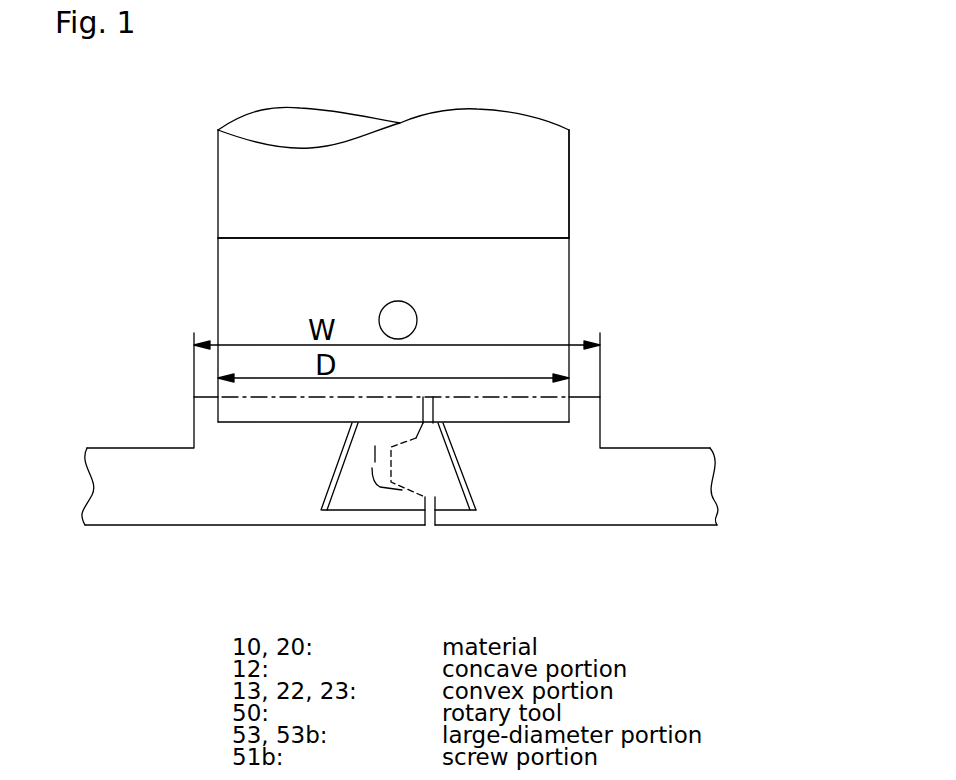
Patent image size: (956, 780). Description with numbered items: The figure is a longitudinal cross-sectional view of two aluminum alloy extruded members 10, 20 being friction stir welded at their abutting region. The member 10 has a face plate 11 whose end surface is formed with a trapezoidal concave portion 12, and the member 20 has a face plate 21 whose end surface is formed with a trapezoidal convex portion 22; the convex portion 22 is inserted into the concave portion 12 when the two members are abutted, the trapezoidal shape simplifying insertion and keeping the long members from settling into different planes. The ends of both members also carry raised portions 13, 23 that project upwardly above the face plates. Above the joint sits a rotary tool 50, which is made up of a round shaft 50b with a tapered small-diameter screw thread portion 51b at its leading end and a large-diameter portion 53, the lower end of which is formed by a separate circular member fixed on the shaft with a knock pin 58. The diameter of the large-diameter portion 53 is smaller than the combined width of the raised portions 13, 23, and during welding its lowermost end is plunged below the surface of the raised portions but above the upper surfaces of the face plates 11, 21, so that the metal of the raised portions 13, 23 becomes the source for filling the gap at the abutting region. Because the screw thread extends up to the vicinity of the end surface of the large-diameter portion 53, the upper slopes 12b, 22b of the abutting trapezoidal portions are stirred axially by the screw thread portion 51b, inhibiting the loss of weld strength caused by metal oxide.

The extruded member 10 is at (253, 504).
The face plate 11 is at (102, 472).
The concave portion 12 is at (375, 468).
The upper slope of concave portion 12b is at (375, 446).
The raised portion 13 is at (203, 414).
The extruded member 20 is at (556, 509).
The face plate 21 is at (683, 462).
The convex portion 22 is at (418, 472).
The upper slope of convex portion 22b is at (415, 440).
The raised portion 23 is at (583, 412).
The rotary tool 50 is at (467, 327).
The round shaft 50b is at (557, 178).
The screw thread portion 51b is at (373, 512).
The large-diameter portion 53 is at (467, 330).
The knock pin 58 is at (410, 302).